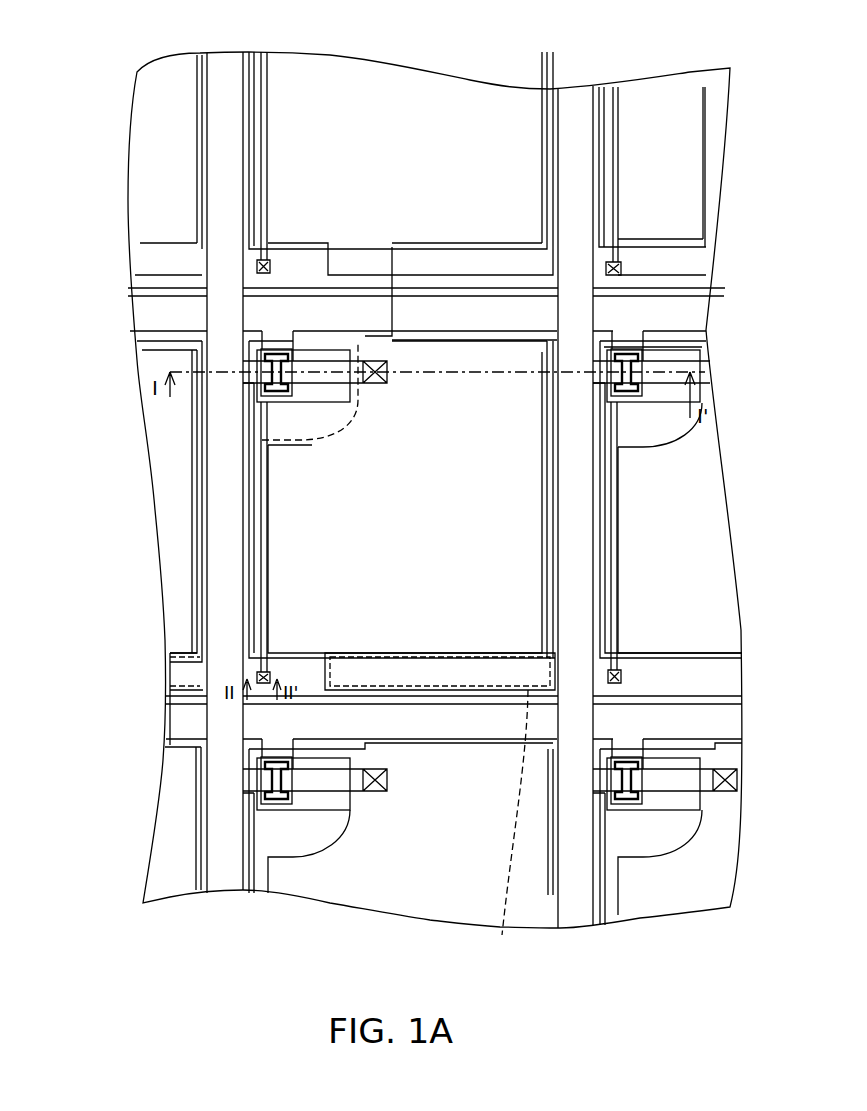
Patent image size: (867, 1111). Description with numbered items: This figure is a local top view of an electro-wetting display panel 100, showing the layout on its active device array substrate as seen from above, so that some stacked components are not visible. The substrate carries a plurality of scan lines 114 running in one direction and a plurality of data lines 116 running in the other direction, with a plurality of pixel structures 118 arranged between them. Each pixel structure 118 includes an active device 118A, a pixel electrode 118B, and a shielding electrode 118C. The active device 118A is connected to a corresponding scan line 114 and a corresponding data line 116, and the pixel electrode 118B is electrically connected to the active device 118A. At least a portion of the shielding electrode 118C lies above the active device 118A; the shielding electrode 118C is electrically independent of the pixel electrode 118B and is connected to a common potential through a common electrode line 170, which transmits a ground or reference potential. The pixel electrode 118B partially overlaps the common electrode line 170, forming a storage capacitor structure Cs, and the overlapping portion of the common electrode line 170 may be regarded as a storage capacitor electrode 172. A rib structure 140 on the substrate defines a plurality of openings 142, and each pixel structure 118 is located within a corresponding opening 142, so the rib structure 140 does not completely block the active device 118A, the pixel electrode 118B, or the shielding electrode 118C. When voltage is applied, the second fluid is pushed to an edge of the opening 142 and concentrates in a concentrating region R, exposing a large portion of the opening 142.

The electro-wetting display panel 100 is at (688, 959).
The scan line 114 is at (353, 331).
The data line 116 is at (240, 163).
The pixel structure 118 is at (66, 395).
The active device 118A is at (282, 407).
The pixel electrode 118B is at (268, 500).
The shielding electrode 118C is at (253, 392).
The rib structure 140 is at (402, 292).
The opening 142 is at (413, 352).
The common electrode line 170 is at (322, 285).
The storage capacitor electrode 172 is at (493, 678).
The storage capacitor structure Cs is at (365, 800).
The concentrating region R is at (302, 440).